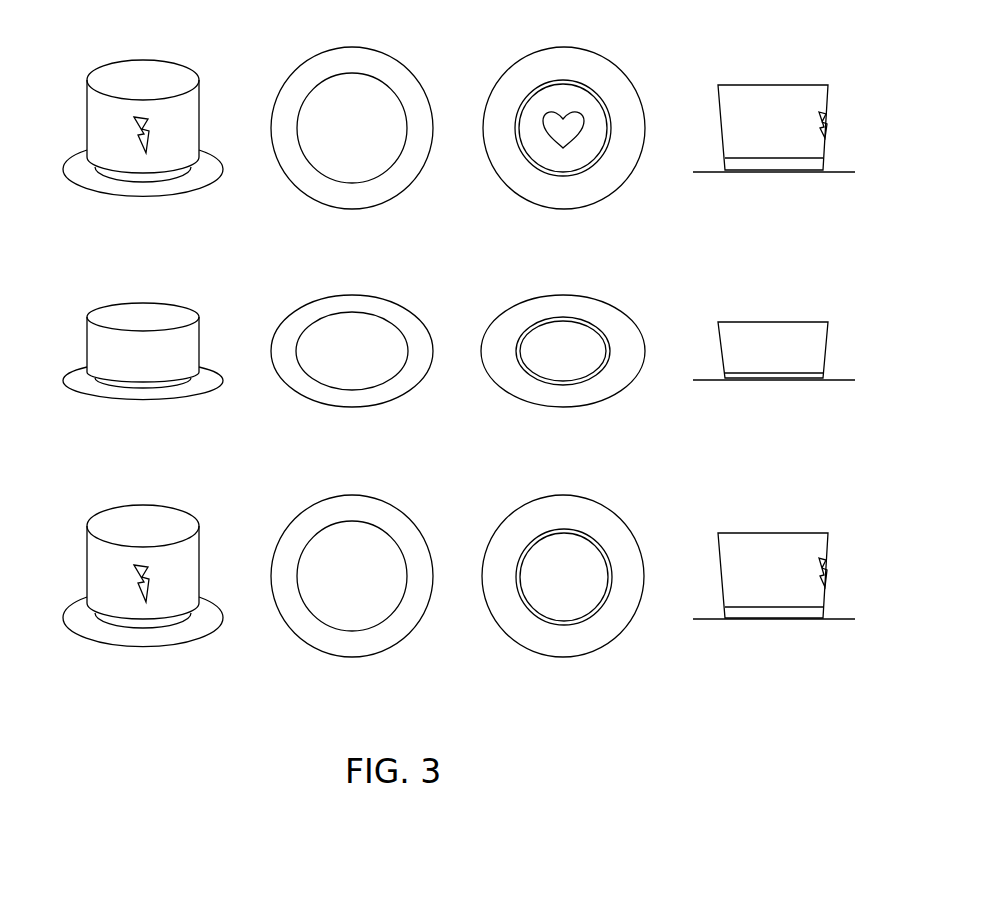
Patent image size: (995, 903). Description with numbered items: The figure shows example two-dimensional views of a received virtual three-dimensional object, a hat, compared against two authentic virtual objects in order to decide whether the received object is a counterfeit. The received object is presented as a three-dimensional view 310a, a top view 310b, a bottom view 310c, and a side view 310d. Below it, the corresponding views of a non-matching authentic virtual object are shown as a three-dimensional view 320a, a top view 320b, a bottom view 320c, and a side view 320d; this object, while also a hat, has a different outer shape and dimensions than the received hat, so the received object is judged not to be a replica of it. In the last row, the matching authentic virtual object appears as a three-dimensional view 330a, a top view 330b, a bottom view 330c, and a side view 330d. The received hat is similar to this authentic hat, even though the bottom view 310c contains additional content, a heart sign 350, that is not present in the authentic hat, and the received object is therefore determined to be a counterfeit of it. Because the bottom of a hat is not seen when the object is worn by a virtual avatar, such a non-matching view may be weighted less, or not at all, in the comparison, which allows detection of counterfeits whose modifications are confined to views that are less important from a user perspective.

The 3D view of the received virtual object 310a is at (138, 52).
The top view of the received virtual object 310b is at (340, 43).
The bottom view of the received virtual object 310c is at (563, 112).
The side view of the received virtual object 310d is at (775, 73).
The heart sign 350 is at (585, 117).
The 3D view of the non-matching virtual object 320a is at (138, 293).
The top view of the non-matching virtual object 320b is at (350, 288).
The bottom view of the non-matching virtual object 320c is at (560, 288).
The side view of the non-matching virtual object 320d is at (778, 293).
The 3D view of the matching virtual object 330a is at (143, 496).
The top view of the matching virtual object 330b is at (347, 490).
The bottom view of the matching virtual object 330c is at (562, 488).
The side view of the matching virtual object 330d is at (773, 492).